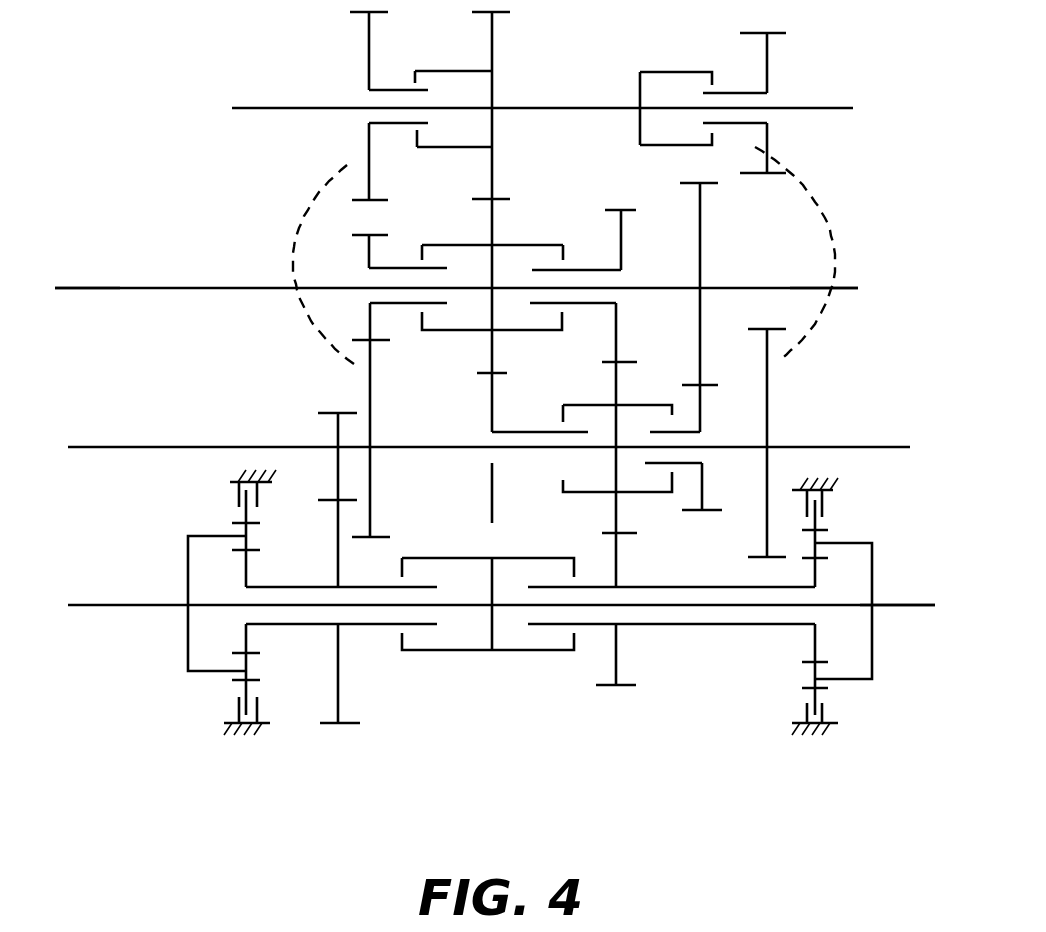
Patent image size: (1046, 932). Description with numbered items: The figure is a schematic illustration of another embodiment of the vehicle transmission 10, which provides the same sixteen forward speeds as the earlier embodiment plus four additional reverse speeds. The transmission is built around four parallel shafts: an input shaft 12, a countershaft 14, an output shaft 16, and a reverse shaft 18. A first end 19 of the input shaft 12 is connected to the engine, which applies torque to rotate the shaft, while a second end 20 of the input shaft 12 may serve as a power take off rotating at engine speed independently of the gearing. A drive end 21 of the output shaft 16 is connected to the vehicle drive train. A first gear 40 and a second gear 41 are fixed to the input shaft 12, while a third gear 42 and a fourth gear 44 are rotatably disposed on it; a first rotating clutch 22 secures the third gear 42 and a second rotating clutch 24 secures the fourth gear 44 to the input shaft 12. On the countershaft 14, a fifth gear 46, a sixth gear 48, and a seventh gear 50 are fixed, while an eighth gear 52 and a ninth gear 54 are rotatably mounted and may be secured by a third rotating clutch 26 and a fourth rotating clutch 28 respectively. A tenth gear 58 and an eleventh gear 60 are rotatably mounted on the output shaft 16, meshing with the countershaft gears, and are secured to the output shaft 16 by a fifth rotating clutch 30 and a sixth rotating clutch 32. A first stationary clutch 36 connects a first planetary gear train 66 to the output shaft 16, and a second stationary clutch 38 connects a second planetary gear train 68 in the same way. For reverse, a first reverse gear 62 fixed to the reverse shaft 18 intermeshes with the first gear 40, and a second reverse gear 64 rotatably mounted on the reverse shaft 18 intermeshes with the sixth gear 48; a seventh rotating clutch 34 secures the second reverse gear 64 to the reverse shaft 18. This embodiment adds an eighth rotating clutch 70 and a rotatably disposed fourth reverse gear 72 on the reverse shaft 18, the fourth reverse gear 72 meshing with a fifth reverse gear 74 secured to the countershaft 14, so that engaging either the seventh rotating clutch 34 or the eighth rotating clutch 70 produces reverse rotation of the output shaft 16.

The vehicle transmission 10 is at (184, 58).
The input shaft 12 is at (140, 288).
The countershaft 14 is at (113, 447).
The output shaft 16 is at (100, 605).
The reverse shaft 18 is at (238, 108).
The first end 19 is at (55, 288).
The second end 20 is at (850, 288).
The drive end 21 is at (895, 606).
The first rotating clutch 22 is at (435, 254).
The second rotating clutch 24 is at (560, 254).
The third rotating clutch 26 is at (580, 416).
The fourth rotating clutch 28 is at (660, 414).
The fifth rotating clutch 30 is at (424, 574).
The sixth rotating clutch 32 is at (543, 574).
The seventh rotating clutch 34 is at (420, 70).
The first stationary clutch 36 is at (240, 488).
The second stationary clutch 38 is at (822, 504).
The first gear 40 is at (492, 216).
The second gear 41 is at (700, 239).
The third gear 42 is at (369, 248).
The fourth gear 44 is at (621, 233).
The fifth gear 46 is at (338, 426).
The sixth gear 48 is at (371, 403).
The seventh gear 50 is at (620, 380).
The eighth gear 52 is at (493, 404).
The ninth gear 54 is at (700, 407).
The tenth gear 58 is at (338, 555).
The eleventh gear 60 is at (618, 566).
The first reverse gear 62 is at (492, 50).
The second reverse gear 64 is at (369, 58).
The first planetary gear train 66 is at (187, 520).
The second planetary gear train 68 is at (862, 543).
The eighth rotating clutch 70 is at (670, 82).
The fourth reverse gear 72 is at (768, 66).
The fifth reverse gear 74 is at (770, 404).